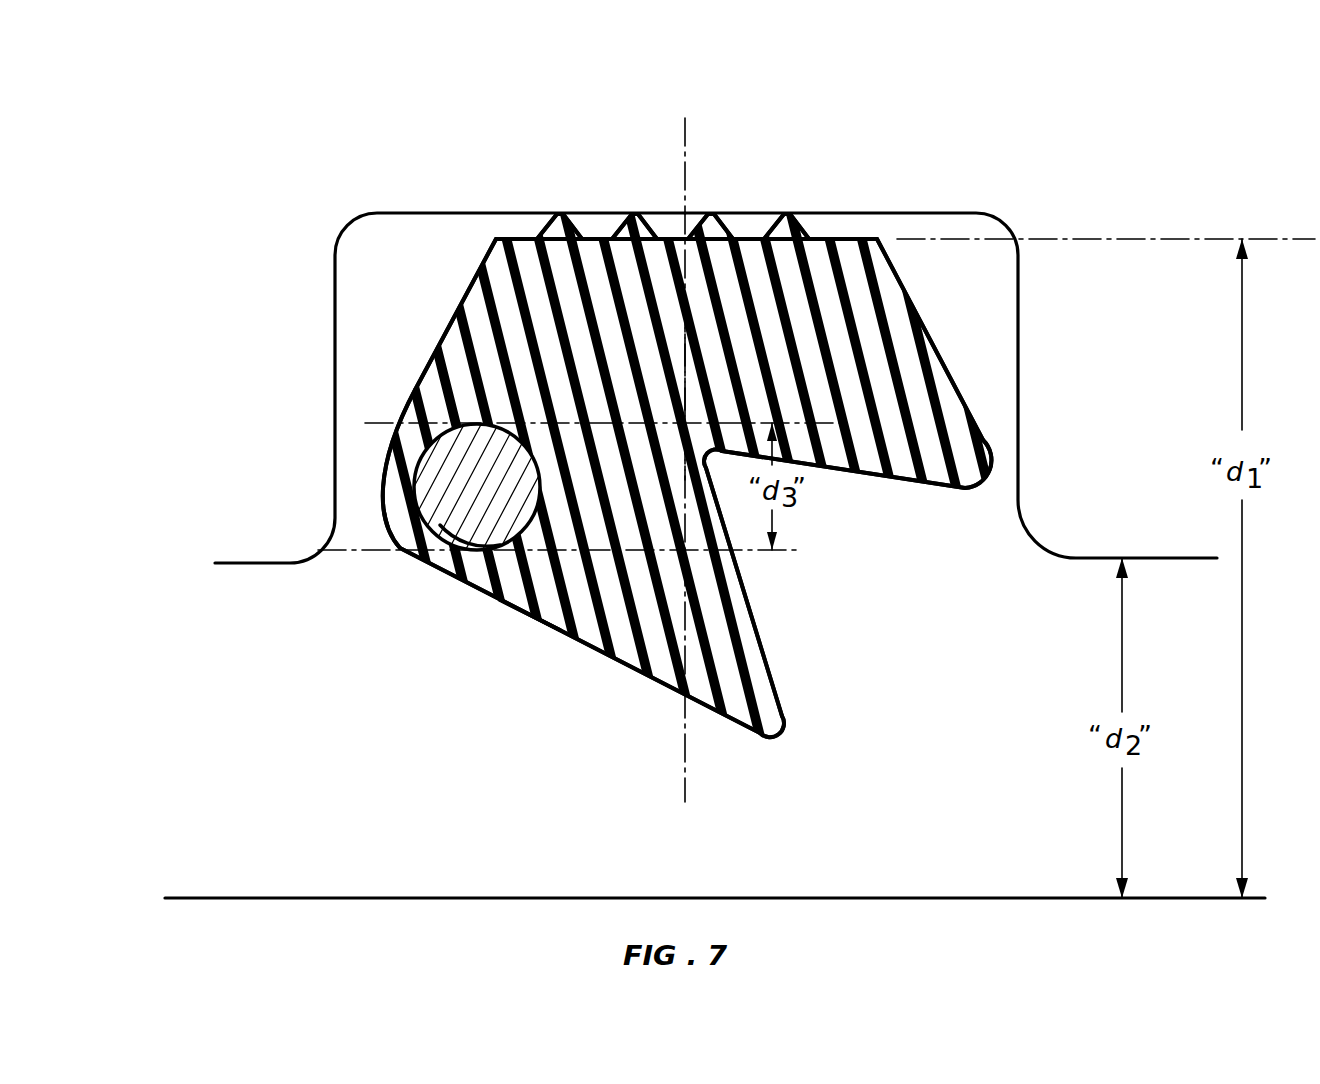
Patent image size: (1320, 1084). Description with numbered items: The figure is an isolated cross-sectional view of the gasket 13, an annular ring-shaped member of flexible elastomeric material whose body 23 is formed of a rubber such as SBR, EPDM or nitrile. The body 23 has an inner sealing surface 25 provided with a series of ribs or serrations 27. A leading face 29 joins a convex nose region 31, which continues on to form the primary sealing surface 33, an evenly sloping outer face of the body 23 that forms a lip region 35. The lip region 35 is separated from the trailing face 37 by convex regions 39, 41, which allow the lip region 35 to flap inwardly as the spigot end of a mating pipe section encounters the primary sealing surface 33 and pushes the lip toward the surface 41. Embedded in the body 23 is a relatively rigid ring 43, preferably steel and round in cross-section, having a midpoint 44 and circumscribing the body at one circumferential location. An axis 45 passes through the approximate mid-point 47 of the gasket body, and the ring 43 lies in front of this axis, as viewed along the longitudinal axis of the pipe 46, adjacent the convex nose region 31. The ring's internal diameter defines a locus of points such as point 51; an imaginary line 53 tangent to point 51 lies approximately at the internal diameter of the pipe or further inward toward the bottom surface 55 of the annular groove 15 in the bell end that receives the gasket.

The gasket 13 is at (968, 280).
The annular groove 15 is at (1020, 488).
The body 23 is at (507, 303).
The inner sealing surface 25 is at (753, 238).
The ribs or serrations 27 is at (560, 213).
The leading face 29 is at (445, 330).
The convex nose region 31 is at (383, 523).
The primary sealing surface 33 is at (592, 647).
The lip region 35 is at (768, 722).
The trailing face 37 is at (958, 393).
The convex region 39 is at (746, 580).
The convex region 41 is at (878, 478).
The relatively rigid ring 43 is at (441, 481).
The midpoint 44 is at (475, 493).
The axis 45 is at (687, 177).
The pipe 46 is at (771, 898).
The mid-point 47 is at (687, 392).
The point 51 is at (472, 560).
The imaginary line 53 is at (541, 552).
The bottom surface 55 is at (388, 218).